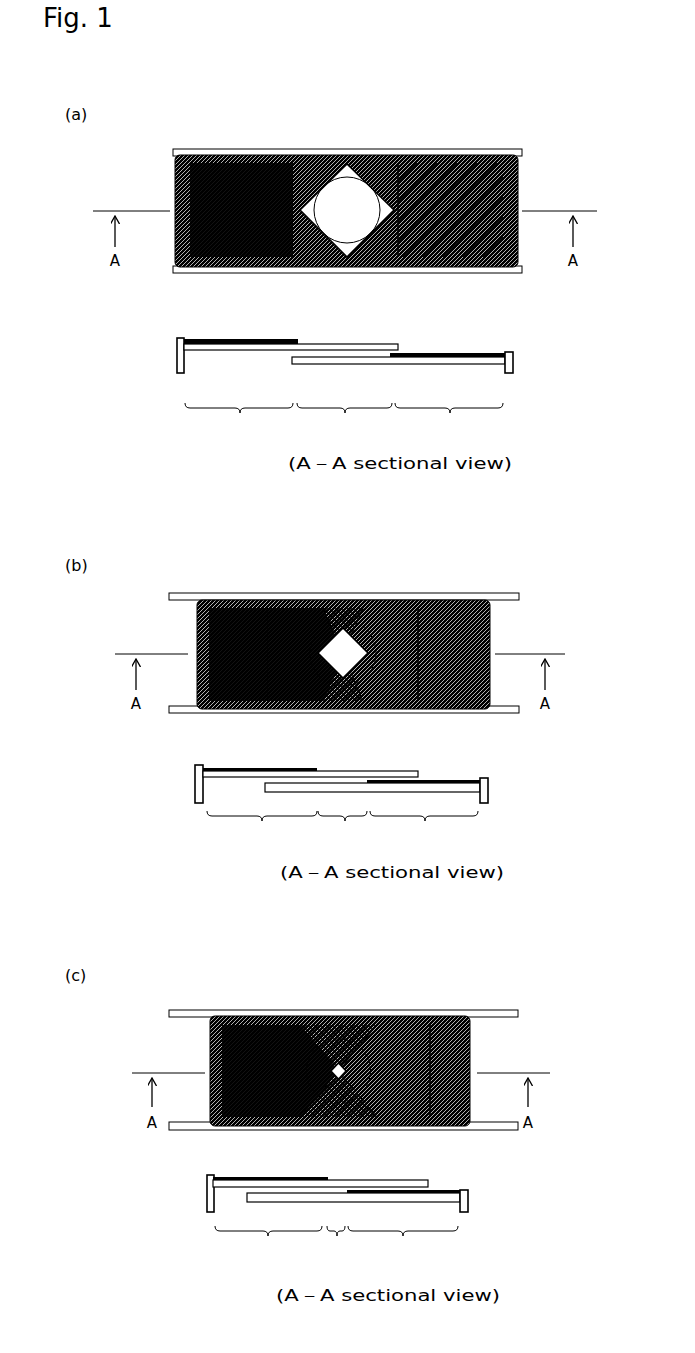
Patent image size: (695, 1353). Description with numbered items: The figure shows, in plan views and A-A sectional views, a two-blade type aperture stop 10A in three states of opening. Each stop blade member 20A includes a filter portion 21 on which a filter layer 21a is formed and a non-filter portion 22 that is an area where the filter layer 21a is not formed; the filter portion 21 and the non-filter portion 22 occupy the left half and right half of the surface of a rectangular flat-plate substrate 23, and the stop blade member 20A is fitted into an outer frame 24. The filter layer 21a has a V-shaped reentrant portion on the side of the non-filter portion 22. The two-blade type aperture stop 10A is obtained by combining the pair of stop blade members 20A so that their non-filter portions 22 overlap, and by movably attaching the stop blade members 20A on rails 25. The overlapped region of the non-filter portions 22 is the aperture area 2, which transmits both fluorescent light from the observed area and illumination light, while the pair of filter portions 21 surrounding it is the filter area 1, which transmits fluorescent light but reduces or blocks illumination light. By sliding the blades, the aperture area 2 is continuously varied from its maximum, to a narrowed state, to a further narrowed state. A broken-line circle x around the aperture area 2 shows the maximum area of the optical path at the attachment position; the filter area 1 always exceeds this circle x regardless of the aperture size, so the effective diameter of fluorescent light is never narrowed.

The filter area 1 is at (312, 182).
The aperture area 2 is at (340, 190).
The broken-line circle x is at (352, 178).
The two-blade type aperture stop 10A is at (386, 640).
The stop blade member 20A is at (171, 175).
The filter portion 21 is at (291, 725).
The filter layer 21a is at (293, 312).
The non-filter portion 22 is at (298, 312).
The substrate 23 is at (237, 350).
The outer frame 24 is at (450, 155).
The rail 25 is at (517, 150).